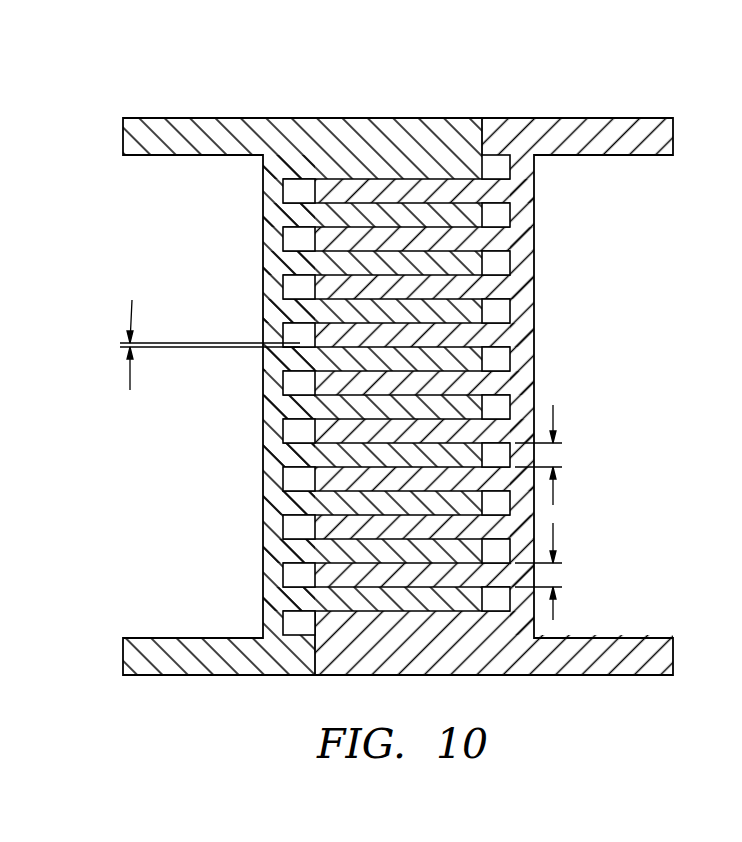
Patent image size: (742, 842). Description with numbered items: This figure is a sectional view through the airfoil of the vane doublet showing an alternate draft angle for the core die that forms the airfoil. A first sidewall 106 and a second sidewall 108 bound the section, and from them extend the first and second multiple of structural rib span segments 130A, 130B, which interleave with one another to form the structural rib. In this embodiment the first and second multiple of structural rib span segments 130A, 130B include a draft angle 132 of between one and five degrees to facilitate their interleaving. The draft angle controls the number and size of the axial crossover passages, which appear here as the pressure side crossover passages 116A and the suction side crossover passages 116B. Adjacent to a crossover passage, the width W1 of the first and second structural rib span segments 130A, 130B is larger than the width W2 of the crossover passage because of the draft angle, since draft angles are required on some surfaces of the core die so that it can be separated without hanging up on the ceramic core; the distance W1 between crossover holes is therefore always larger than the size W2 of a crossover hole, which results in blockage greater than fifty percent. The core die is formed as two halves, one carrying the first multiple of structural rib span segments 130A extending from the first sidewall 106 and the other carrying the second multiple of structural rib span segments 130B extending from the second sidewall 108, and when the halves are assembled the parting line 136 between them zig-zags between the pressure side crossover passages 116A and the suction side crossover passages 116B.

The first sidewall 106 is at (263, 227).
The second sidewall 108 is at (535, 238).
The pressure side crossover passages 116A is at (303, 527).
The suction side crossover passages 116B is at (497, 357).
The first multiple of structural rib span segments 130A is at (297, 455).
The second multiple of structural rib span segments 130B is at (493, 332).
The draft angle 132 is at (130, 378).
The parting line 136 is at (383, 175).
The width of the structural rib span segments W1 is at (553, 535).
The width of the axial crossover passages W2 is at (553, 420).